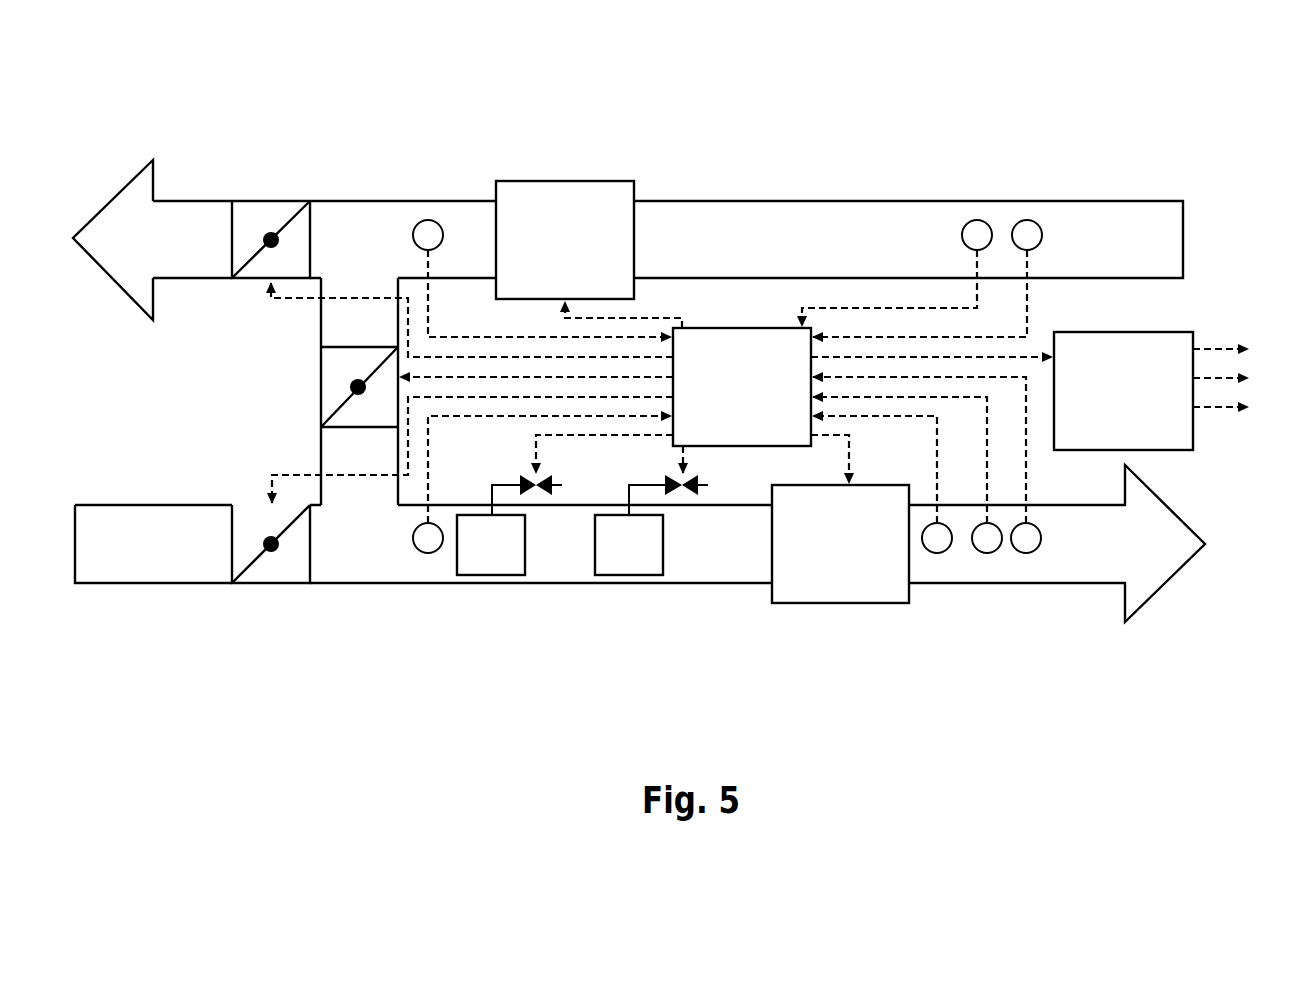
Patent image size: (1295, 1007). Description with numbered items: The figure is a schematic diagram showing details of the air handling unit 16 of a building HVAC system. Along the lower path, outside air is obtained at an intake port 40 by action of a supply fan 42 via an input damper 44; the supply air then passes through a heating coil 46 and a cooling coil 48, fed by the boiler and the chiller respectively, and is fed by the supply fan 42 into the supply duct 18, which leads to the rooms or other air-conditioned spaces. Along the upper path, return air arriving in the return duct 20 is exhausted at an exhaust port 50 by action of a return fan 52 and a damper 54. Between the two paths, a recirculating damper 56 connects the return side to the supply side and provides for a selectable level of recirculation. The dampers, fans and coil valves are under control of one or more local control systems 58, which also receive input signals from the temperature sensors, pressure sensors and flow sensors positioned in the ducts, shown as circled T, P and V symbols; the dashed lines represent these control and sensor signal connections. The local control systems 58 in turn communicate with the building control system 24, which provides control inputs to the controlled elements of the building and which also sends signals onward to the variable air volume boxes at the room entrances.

The air handling unit 16 is at (747, 128).
The supply duct 18 is at (1177, 533).
The return duct 20 is at (1107, 201).
The building control system 24 is at (1153, 331).
The intake port 40 is at (153, 544).
The supply fan 42 is at (840, 544).
The input damper 44 is at (280, 572).
The heating coil 46 is at (475, 562).
The cooling coil 48 is at (648, 562).
The exhaust port 50 is at (145, 240).
The return fan 52 is at (515, 185).
The damper 54 is at (262, 212).
The recirculating damper 56 is at (334, 386).
The local control systems 58 is at (693, 327).